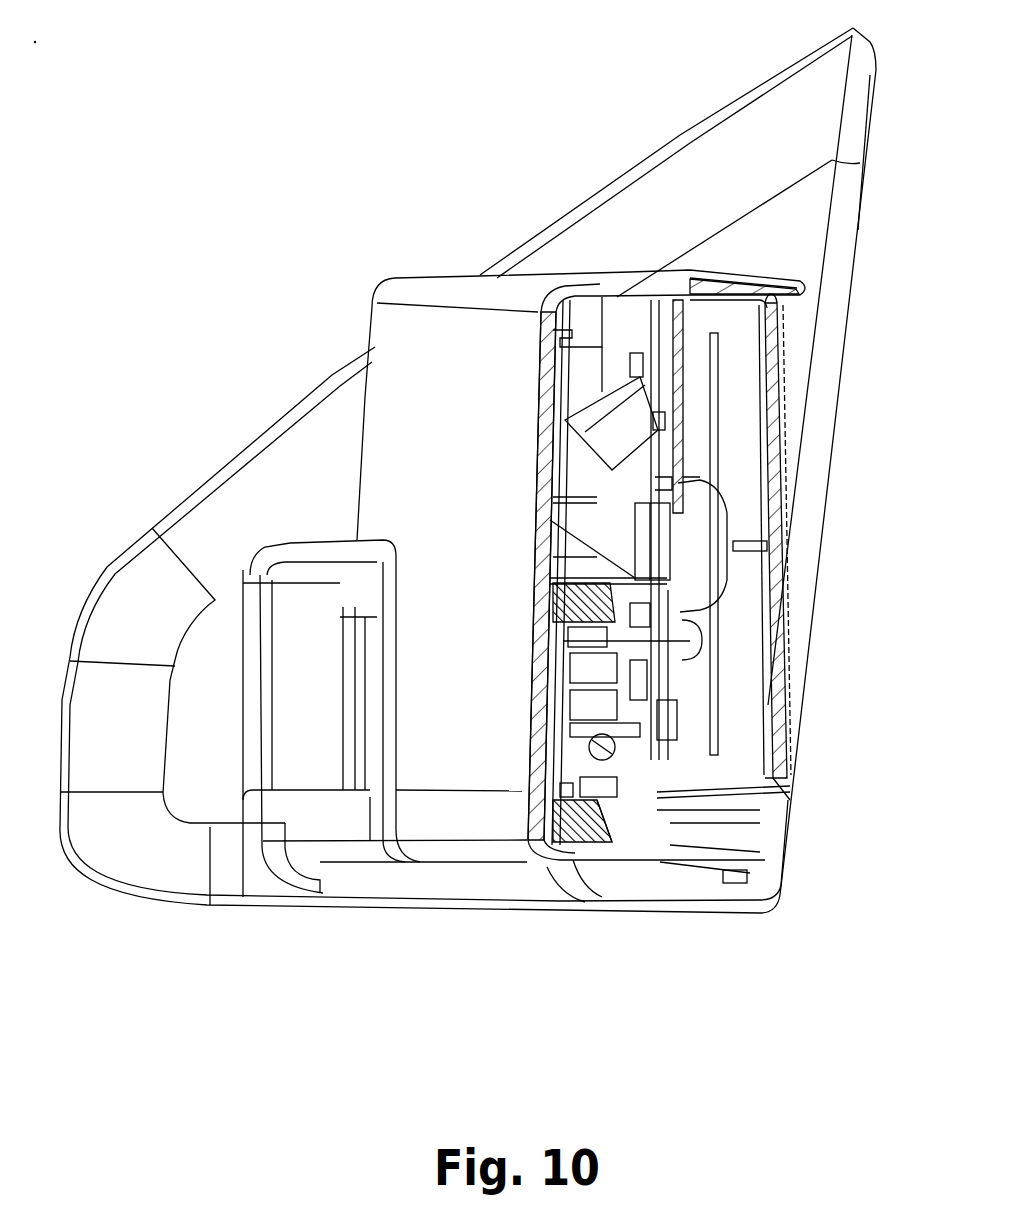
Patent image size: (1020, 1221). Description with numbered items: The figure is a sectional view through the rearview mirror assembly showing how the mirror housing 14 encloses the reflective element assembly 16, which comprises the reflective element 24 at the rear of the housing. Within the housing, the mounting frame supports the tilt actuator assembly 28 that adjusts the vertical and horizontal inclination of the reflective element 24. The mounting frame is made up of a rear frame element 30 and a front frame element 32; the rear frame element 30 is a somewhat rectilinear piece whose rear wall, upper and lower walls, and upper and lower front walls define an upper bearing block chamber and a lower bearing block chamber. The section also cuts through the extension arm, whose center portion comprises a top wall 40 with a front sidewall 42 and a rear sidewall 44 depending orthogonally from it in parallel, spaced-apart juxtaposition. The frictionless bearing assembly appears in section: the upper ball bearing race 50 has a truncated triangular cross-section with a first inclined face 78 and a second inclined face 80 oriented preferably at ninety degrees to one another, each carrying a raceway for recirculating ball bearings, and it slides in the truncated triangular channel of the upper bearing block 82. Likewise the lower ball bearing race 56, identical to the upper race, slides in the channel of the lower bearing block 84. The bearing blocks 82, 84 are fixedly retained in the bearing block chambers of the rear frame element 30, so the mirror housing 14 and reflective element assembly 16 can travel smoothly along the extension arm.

The mirror housing 14 is at (405, 345).
The reflective element assembly 16 is at (784, 318).
The reflective element 24 is at (780, 353).
The tilt actuator assembly 28 is at (730, 580).
The rear frame element 30 is at (617, 523).
The front frame element 32 is at (760, 793).
The top wall 40 is at (690, 637).
The front sidewall 42 is at (627, 702).
The rear sidewall 44 is at (570, 725).
The upper ball bearing race 50 is at (618, 608).
The lower ball bearing race 56 is at (570, 805).
The first inclined face 78 is at (600, 610).
The second inclined face 80 is at (617, 622).
The upper bearing block 82 is at (573, 592).
The lower bearing block 84 is at (583, 838).